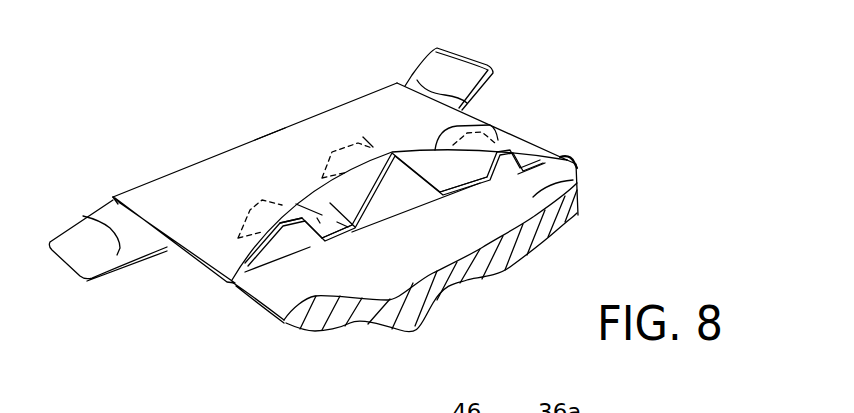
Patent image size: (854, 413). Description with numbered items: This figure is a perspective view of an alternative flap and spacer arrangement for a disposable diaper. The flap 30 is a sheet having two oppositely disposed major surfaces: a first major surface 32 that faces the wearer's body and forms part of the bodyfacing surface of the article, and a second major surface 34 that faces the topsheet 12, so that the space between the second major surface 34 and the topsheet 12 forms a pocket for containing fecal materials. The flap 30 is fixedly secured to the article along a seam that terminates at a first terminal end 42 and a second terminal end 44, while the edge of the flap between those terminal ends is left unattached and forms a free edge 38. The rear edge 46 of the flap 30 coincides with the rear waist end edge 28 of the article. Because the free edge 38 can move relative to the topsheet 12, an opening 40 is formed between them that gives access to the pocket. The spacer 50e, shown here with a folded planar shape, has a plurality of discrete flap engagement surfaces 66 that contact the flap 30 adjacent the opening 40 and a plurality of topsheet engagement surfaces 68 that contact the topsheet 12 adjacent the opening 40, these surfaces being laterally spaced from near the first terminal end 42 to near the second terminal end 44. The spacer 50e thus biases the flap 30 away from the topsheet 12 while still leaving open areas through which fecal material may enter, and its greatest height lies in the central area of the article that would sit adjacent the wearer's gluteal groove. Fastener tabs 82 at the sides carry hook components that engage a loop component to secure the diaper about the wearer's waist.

The topsheet 12 is at (573, 180).
The rear waist end edge 28 is at (239, 144).
The flap 30 is at (333, 128).
The first major surface 32 is at (397, 83).
The second major surface 34 is at (229, 190).
The free edge 38 is at (480, 135).
The opening 40 is at (392, 150).
The first terminal end 42 is at (231, 284).
The second terminal end 44 is at (573, 163).
The rear edge 46 is at (269, 134).
The spacer 50e is at (350, 229).
The flap engagement surfaces 66 is at (271, 200).
The topsheet engagement surfaces 68 is at (320, 238).
The fastener tabs 82 is at (93, 250).